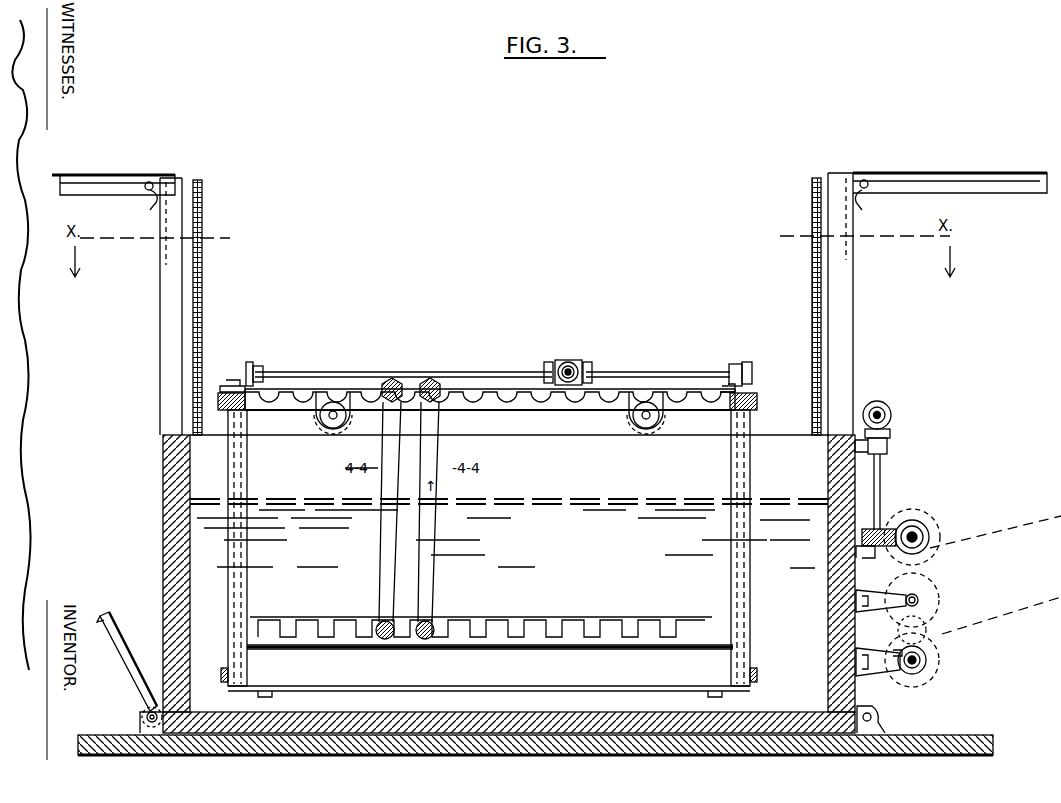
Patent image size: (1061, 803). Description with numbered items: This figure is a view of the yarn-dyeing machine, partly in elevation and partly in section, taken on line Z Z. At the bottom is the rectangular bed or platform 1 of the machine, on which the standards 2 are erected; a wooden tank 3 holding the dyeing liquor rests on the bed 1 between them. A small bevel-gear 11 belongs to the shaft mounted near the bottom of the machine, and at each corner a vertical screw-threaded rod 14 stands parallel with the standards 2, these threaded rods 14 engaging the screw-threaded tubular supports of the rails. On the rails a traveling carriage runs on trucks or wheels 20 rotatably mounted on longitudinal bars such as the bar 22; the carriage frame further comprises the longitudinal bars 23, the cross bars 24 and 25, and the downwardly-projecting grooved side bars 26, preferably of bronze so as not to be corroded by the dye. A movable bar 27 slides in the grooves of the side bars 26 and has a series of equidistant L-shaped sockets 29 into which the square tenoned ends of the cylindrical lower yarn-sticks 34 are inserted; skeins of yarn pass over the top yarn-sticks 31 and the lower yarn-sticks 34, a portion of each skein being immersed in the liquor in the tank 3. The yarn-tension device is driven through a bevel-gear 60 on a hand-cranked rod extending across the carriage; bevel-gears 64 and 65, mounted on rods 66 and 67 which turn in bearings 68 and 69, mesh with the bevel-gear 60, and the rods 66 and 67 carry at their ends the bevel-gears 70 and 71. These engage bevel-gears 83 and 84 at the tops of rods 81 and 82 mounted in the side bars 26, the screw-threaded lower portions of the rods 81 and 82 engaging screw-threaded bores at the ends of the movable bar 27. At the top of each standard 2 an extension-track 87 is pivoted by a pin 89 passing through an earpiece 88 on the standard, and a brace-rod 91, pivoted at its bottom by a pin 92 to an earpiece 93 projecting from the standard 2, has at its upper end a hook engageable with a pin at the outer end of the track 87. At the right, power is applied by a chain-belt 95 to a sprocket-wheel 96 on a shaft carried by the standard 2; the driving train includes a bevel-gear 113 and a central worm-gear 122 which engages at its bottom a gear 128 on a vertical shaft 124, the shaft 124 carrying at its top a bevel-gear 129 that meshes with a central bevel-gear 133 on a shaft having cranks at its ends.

The bed or platform 1 is at (992, 726).
The standard 2 is at (504, 304).
The tank 3 is at (509, 584).
The bevel-gear 11 is at (898, 676).
The screw-threaded rod 14 is at (812, 304).
The trucks or wheels 20 is at (665, 424).
The longitudinal bar 22 is at (490, 408).
The longitudinal bars 23 is at (490, 664).
The cross bar 24 is at (757, 402).
The cross bar 25 is at (221, 676).
The side bars 26 is at (489, 548).
The movable bar 27 is at (481, 644).
The L-shaped sockets or mortises 29 is at (527, 613).
The top yarn-stick 31 is at (436, 378).
The lower yarn-sticks 34 is at (426, 640).
The bevel-gear 60 is at (568, 360).
The bevel-gear 64 is at (548, 362).
The bevel-gear 65 is at (588, 362).
The rod 66 is at (366, 372).
The rod 67 is at (676, 372).
The bearing 68 is at (258, 366).
The bearing 69 is at (735, 364).
The bevel-gear 70 is at (249, 362).
The bevel-gear 71 is at (750, 364).
The rod 81 is at (247, 662).
The rod 82 is at (731, 666).
The bevel-gear 83 is at (226, 386).
The bevel-gear 84 is at (740, 388).
The extension-track 87 is at (537, 195).
The earpiece 88 is at (866, 206).
The pin 89 is at (864, 180).
The brace-rod 91 is at (127, 661).
The pin 92 is at (145, 712).
The earpiece 93 is at (880, 720).
The chain-belt 95 is at (995, 575).
The sprocket-wheel 96 is at (916, 608).
The bevel-gear 113 is at (928, 660).
The worm-gear 122 is at (918, 537).
The shaft 124 is at (896, 492).
The gear 128 is at (895, 525).
The bevel-gear 129 is at (890, 435).
The bevel-gear 133 is at (884, 404).